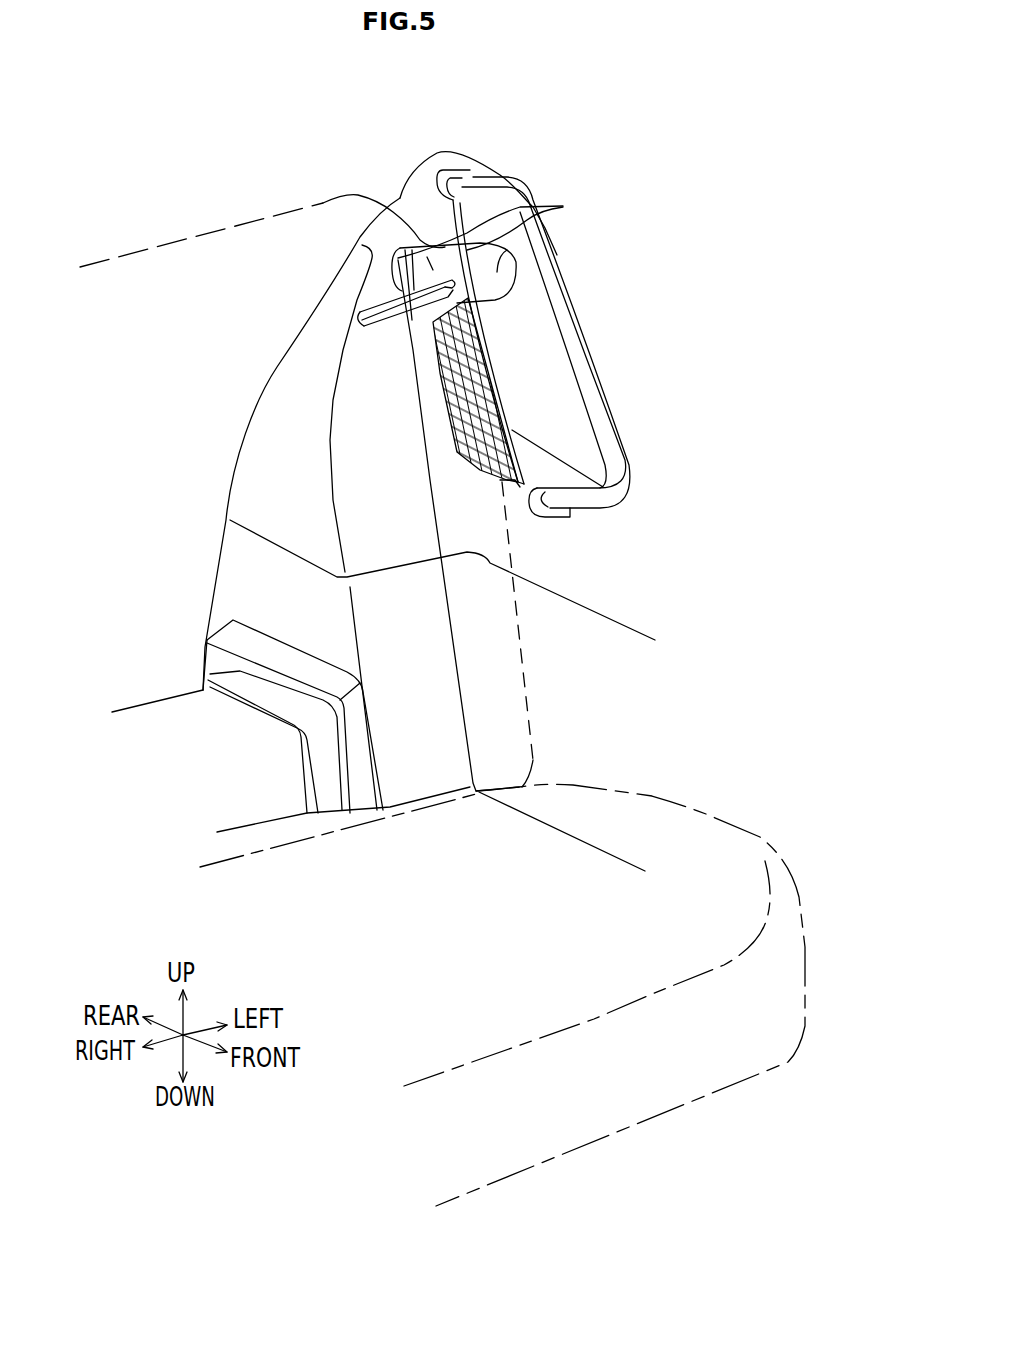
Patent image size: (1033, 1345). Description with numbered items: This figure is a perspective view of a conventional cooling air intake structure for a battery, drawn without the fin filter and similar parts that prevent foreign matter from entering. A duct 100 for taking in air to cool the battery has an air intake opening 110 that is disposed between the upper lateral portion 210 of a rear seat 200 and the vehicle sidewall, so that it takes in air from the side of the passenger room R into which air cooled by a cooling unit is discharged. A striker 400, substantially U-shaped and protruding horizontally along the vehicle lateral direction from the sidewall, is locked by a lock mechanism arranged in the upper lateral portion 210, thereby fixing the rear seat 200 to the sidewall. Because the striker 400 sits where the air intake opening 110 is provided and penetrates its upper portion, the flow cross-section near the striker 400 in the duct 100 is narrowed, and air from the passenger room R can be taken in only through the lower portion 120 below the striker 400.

The duct 100 is at (288, 437).
The air intake opening 110 is at (530, 345).
The lower portion 120 is at (560, 407).
The rear seat 200 is at (218, 217).
The upper lateral portion 210 is at (330, 200).
The striker 400 is at (486, 258).
The passenger room R is at (670, 712).